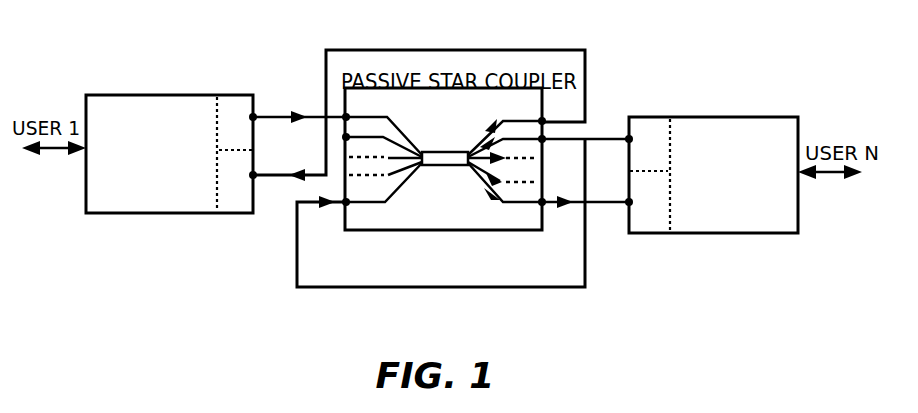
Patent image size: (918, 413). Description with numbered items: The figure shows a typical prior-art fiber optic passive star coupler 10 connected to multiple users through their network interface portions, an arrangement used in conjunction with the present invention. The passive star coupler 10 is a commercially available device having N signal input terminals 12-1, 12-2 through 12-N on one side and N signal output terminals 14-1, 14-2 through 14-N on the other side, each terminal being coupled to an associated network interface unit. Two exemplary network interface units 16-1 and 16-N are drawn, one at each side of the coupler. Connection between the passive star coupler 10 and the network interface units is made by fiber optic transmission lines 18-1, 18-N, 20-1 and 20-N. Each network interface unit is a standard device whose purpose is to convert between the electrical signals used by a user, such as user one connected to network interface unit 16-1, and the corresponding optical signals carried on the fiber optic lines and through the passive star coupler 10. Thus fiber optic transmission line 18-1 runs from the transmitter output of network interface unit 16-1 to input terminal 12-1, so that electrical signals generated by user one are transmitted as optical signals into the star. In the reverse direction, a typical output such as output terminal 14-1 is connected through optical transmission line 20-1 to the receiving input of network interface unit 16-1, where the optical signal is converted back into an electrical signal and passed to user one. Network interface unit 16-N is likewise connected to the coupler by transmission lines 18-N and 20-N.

The passive star coupler 10 is at (410, 231).
The signal input terminal 12-1 is at (348, 116).
The signal input terminal 12-2 is at (344, 137).
The signal input terminal 12-N is at (343, 205).
The signal output terminal 14-1 is at (555, 124).
The signal output terminal 14-2 is at (560, 138).
The signal output terminal 14-N is at (543, 208).
The network interface unit 16-1 is at (193, 95).
The network interface unit 16-N is at (768, 117).
The fiber optic transmission line 18-1 is at (308, 114).
The fiber optic transmission line 18-N is at (453, 288).
The optical transmission line 20-1 is at (362, 50).
The optical transmission line 20-N is at (575, 206).